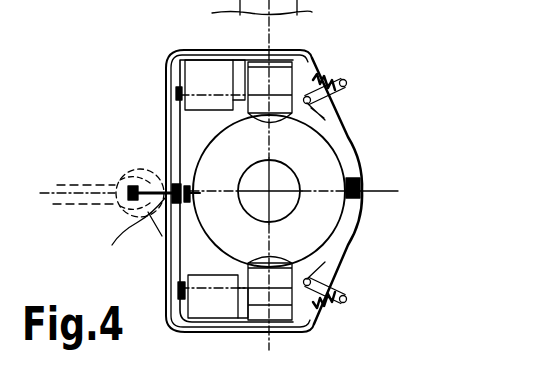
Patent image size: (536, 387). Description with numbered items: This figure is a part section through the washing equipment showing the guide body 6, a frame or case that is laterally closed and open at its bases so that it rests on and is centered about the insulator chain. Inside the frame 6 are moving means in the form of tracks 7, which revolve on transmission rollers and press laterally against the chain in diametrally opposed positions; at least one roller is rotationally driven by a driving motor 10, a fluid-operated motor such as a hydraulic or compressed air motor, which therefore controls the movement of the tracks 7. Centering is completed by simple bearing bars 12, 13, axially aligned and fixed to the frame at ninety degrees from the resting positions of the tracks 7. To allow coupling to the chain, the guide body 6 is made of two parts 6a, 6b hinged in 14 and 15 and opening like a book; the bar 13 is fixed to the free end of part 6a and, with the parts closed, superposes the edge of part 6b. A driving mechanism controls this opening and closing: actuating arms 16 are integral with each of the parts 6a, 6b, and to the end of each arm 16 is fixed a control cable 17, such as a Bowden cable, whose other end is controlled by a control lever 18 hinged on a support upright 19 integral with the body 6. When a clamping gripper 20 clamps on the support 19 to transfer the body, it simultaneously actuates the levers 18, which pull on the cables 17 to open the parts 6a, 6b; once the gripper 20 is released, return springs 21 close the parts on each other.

The guide body 6 is at (257, 52).
The first hinged part of guide body 6a is at (356, 143).
The second hinged part of guide body 6b is at (345, 252).
The tracks 7 is at (275, 88).
The driving motor 10 is at (203, 72).
The bearing bar 12 is at (160, 155).
The bearing bar 13 is at (357, 198).
The hinge 14 is at (327, 112).
The hinge 15 is at (319, 248).
The actuating arm 16 is at (346, 82).
The control cable 17 is at (165, 97).
The control lever 18 is at (112, 245).
The support upright 19 is at (162, 182).
The clamping gripper 20 is at (112, 222).
The return spring 21 is at (330, 70).